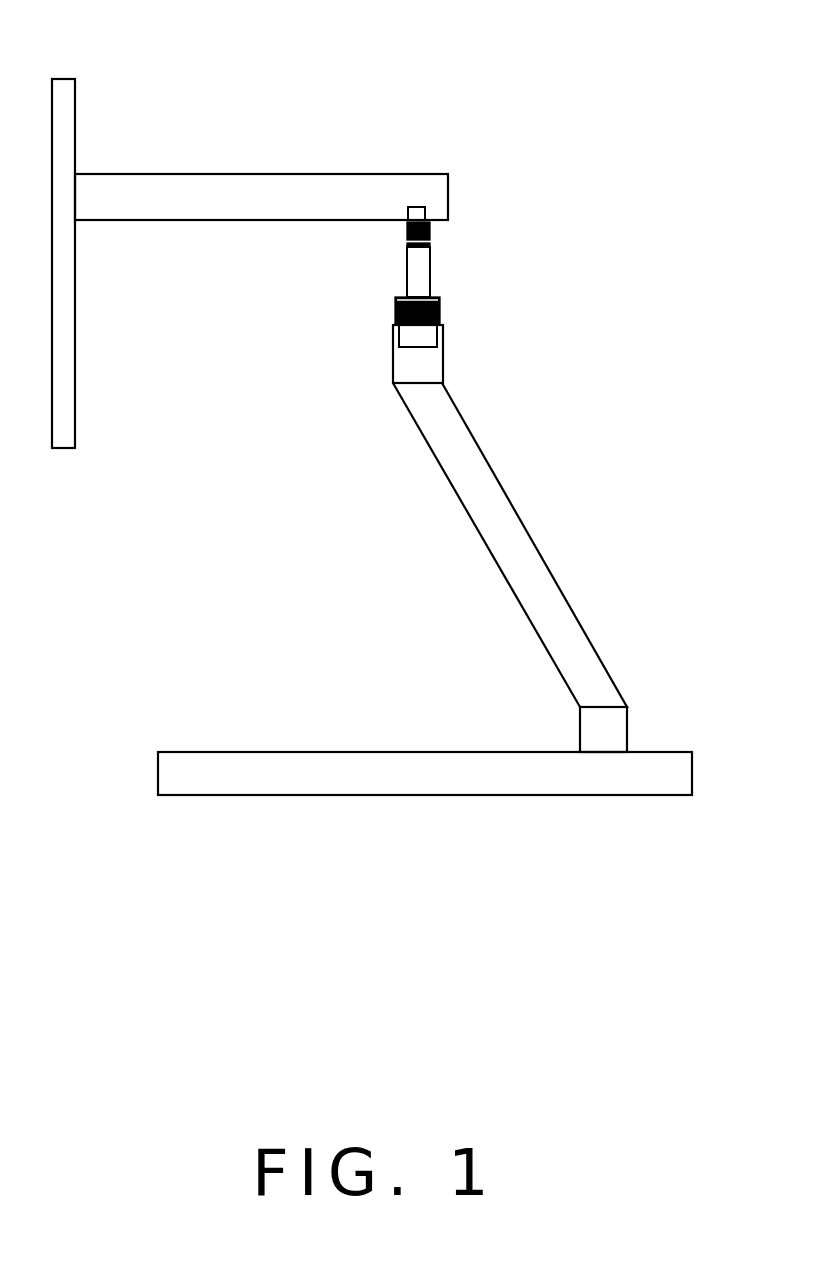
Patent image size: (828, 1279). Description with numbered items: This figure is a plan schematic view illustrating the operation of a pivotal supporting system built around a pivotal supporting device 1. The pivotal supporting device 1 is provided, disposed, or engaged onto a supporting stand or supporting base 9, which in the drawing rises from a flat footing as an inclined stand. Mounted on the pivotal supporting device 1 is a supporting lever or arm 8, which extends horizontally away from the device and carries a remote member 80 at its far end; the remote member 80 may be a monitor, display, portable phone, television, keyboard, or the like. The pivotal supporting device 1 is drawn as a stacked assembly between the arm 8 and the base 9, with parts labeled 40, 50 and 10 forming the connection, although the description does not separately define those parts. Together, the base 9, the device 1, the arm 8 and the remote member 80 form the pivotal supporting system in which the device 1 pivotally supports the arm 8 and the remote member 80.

The remote member 80 is at (68, 114).
The supporting lever or arm 8 is at (168, 203).
The pivotal supporting device 1 is at (490, 270).
The connector plug body 40 is at (433, 259).
The collar / locking ring 50 is at (438, 308).
The socket block 10 is at (410, 335).
The supporting stand or supporting base 9 is at (552, 610).